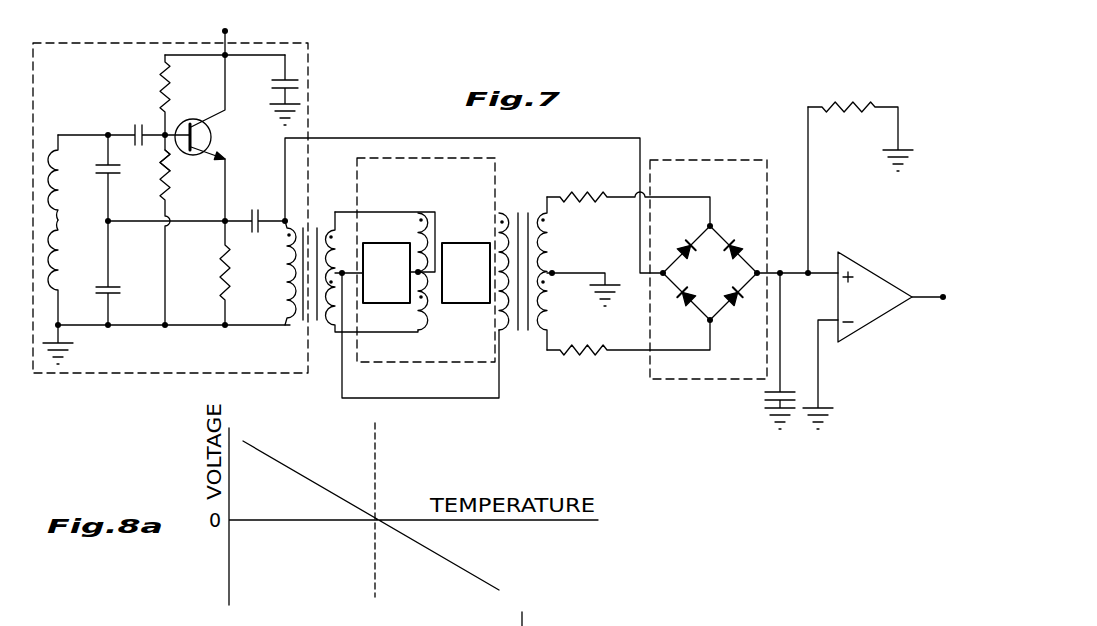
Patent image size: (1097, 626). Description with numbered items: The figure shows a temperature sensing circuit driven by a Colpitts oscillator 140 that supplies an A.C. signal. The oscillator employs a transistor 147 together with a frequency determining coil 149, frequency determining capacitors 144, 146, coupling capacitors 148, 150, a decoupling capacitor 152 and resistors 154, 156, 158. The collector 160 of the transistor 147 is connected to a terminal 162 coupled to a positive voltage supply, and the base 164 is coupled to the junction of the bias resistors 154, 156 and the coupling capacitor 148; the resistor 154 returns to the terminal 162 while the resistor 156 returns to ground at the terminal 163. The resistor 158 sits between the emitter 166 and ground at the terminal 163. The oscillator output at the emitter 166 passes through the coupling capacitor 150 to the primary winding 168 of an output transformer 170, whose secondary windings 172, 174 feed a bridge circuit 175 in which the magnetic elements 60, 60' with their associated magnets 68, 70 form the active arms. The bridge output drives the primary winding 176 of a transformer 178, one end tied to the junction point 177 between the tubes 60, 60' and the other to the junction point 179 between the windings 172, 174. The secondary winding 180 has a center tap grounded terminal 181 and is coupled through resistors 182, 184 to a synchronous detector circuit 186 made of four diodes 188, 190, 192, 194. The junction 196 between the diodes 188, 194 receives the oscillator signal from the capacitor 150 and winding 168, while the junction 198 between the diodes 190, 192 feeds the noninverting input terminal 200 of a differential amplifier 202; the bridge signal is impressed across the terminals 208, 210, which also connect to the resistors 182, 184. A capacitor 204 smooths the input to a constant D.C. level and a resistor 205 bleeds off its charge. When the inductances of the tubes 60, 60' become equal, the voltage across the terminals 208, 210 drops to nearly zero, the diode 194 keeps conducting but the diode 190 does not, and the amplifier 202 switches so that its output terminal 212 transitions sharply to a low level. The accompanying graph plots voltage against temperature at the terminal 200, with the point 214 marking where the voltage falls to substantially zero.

In FIG. 7, the oscillator 140 is at (195, 374).
In FIG. 7, the frequency determining capacitor 144 is at (58, 178).
In FIG. 7, the frequency determining capacitor 146 is at (108, 288).
In FIG. 7, the transistor 147 is at (211, 133).
In FIG. 7, the coupling capacitor 148 is at (135, 130).
In FIG. 7, the frequency determining coil 149 is at (50, 244).
In FIG. 7, the coupling capacitor 150 is at (252, 212).
In FIG. 7, the decoupling capacitor 152 is at (288, 80).
In FIG. 7, the bias resistor 154 is at (165, 76).
In FIG. 7, the bias resistor 156 is at (162, 172).
In FIG. 7, the resistor 158 is at (222, 272).
In FIG. 7, the collector 160 is at (199, 120).
In FIG. 7, the terminal 162 is at (224, 30).
In FIG. 7, the terminal 163 is at (62, 330).
In FIG. 7, the base 164 is at (192, 124).
In FIG. 7, the emitter 166 is at (167, 165).
In FIG. 7, the primary winding 168 is at (283, 290).
In FIG. 7, the output transformer 170 is at (301, 224).
In FIG. 7, the secondary winding 172 is at (325, 235).
In FIG. 7, the secondary winding 174 is at (333, 332).
In FIG. 7, the bridge circuit 175 is at (432, 365).
In FIG. 7, the primary winding 176 is at (506, 335).
In FIG. 7, the junction point 177 is at (430, 288).
In FIG. 7, the transformer 178 is at (518, 213).
In FIG. 7, the junction point 179 is at (344, 305).
In FIG. 7, the secondary winding 180 is at (548, 240).
In FIG. 7, the center tap grounded terminal 181 is at (553, 273).
In FIG. 7, the resistor 182 is at (585, 195).
In FIG. 7, the resistor 184 is at (582, 352).
In FIG. 7, the synchronous detector circuit 186 is at (720, 160).
In FIG. 7, the diode 188 is at (688, 243).
In FIG. 7, the diode 190 is at (737, 243).
In FIG. 7, the diode 192 is at (735, 303).
In FIG. 7, the diode 194 is at (682, 299).
In FIG. 7, the junction 196 is at (662, 280).
In FIG. 7, the junction 198 is at (765, 272).
In FIG. 7, the noninverting input terminal 200 is at (810, 270).
In FIG. 7, the differential amplifier 202 is at (886, 313).
In FIG. 7, the capacitor 204 is at (769, 391).
In FIG. 7, the resistor 205 is at (851, 105).
In FIG. 7, the terminal 208 is at (711, 224).
In FIG. 7, the terminal 210 is at (711, 326).
In FIG. 7, the terminal 212 is at (940, 295).
In FIG. 7, the magnetic element 60 is at (430, 225).
In FIG. 7, the magnetic element 60' is at (436, 318).
In FIG. 7, the magnet 68 is at (397, 244).
In FIG. 7, the magnet 70 is at (462, 257).
In FIG. 8A, the point 214 is at (375, 520).